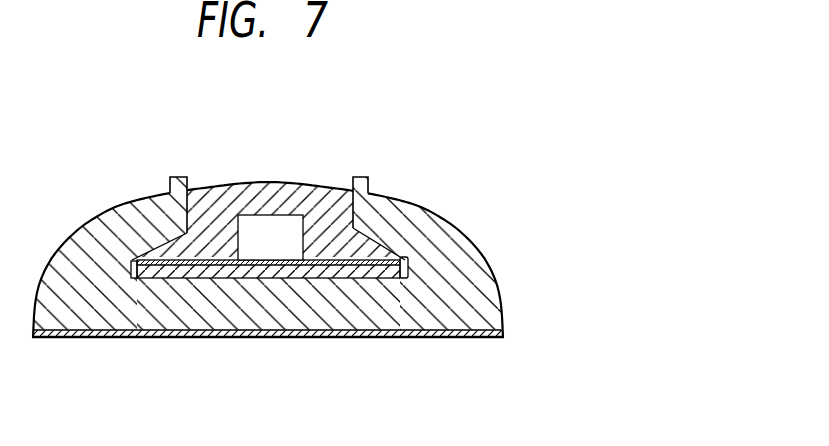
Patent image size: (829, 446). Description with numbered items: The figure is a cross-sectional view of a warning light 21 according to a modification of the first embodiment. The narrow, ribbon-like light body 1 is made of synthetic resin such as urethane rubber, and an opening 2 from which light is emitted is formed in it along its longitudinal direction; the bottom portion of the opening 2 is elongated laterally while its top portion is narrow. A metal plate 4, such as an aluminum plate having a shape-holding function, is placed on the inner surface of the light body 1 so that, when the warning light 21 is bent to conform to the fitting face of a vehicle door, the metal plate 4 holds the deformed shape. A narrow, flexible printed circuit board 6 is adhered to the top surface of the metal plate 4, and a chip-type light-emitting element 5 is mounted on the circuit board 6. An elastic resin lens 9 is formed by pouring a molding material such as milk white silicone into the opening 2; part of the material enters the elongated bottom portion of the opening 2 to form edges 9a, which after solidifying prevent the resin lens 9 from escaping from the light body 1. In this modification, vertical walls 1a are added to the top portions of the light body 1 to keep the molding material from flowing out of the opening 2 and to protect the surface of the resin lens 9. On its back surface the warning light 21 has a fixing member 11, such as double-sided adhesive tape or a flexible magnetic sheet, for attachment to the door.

The light body 1 is at (482, 261).
The vertical walls 1a is at (180, 177).
The opening 2 is at (352, 205).
The metal plate 4 is at (345, 270).
The chip-type light-emitting elements 5 is at (273, 252).
The flexible printed circuit board 6 is at (213, 262).
The resin lens 9 is at (252, 183).
The edges 9a is at (163, 248).
The fixing member 11 is at (412, 337).
The warning light 21 is at (222, 132).